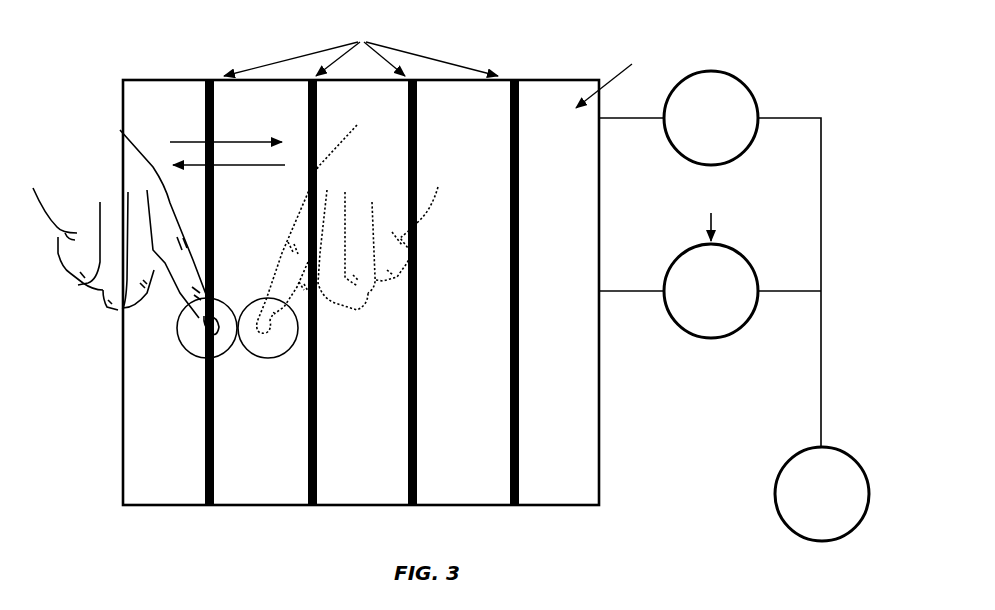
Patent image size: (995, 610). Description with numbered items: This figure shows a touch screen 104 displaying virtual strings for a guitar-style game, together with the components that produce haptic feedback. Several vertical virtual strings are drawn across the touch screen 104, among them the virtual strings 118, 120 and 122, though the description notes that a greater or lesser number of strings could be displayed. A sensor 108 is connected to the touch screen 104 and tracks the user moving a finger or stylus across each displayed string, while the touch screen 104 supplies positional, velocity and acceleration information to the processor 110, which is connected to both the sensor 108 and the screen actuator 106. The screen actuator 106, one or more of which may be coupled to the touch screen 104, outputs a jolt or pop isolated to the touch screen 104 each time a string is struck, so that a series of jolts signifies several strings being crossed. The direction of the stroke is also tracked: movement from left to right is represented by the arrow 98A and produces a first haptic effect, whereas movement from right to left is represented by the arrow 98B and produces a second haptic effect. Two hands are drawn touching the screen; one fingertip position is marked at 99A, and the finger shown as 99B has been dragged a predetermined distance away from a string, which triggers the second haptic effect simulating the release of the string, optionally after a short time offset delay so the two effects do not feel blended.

The arrow 98A is at (247, 140).
The arrow 98B is at (237, 167).
The first touch point 99A is at (207, 334).
The finger 99B is at (267, 334).
The touch screen 104 is at (600, 428).
The screen actuator 106 is at (758, 281).
The sensor 108 is at (758, 108).
The processor 110 is at (775, 494).
The virtual string 118 is at (312, 508).
The virtual string 120 is at (413, 508).
The virtual string 122 is at (515, 508).